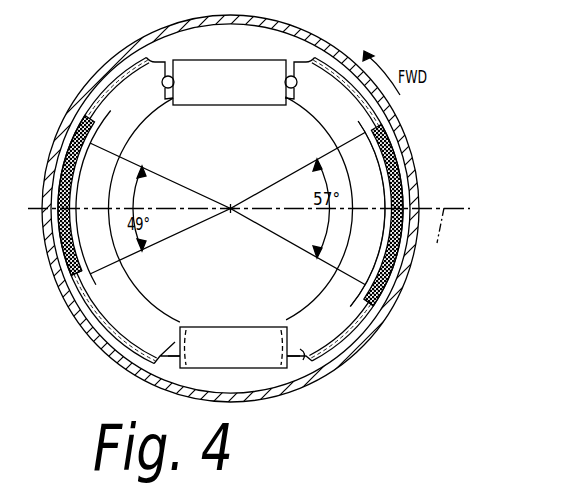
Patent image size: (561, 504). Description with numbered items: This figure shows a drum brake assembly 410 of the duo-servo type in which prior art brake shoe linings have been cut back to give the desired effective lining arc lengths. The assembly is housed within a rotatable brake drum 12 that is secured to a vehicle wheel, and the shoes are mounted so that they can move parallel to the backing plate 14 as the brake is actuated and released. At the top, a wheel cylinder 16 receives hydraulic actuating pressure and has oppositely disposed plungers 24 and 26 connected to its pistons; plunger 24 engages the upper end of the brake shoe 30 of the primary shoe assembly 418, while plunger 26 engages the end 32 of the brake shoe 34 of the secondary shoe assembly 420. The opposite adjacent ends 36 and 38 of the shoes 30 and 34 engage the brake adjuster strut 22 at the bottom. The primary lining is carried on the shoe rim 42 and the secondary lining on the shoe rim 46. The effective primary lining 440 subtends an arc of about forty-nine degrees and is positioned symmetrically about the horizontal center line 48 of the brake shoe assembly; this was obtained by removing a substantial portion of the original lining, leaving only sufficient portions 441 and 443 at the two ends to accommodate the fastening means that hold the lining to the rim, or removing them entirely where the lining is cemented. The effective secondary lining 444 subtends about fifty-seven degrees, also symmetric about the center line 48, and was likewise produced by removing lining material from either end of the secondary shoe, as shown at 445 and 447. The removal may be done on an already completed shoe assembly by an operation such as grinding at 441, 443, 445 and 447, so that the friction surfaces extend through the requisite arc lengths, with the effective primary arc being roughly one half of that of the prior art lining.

The brake drum 12 is at (289, 390).
The backing plate 14 is at (217, 38).
The wheel cylinder 16 is at (235, 95).
The brake adjuster strut 22 is at (227, 337).
The plunger 24 is at (176, 85).
The plunger 26 is at (289, 90).
The brake shoe 30 is at (130, 98).
The shoe end 32 is at (302, 70).
The brake shoe 34 is at (335, 117).
The shoe end 36 is at (173, 345).
The shoe end 38 is at (300, 347).
The shoe rim 42 is at (93, 290).
The shoe rim 46 is at (368, 300).
The horizontal center line 48 is at (434, 251).
The drum brake assembly 410 is at (87, 387).
The primary shoe assembly 418 is at (90, 100).
The secondary shoe assembly 420 is at (368, 157).
The primary lining 440 is at (65, 173).
The lining end portion 441 is at (85, 128).
The lining end portion 443 is at (106, 308).
The secondary lining 444 is at (397, 178).
The removed lining area 445 is at (370, 120).
The removed lining area 447 is at (347, 332).